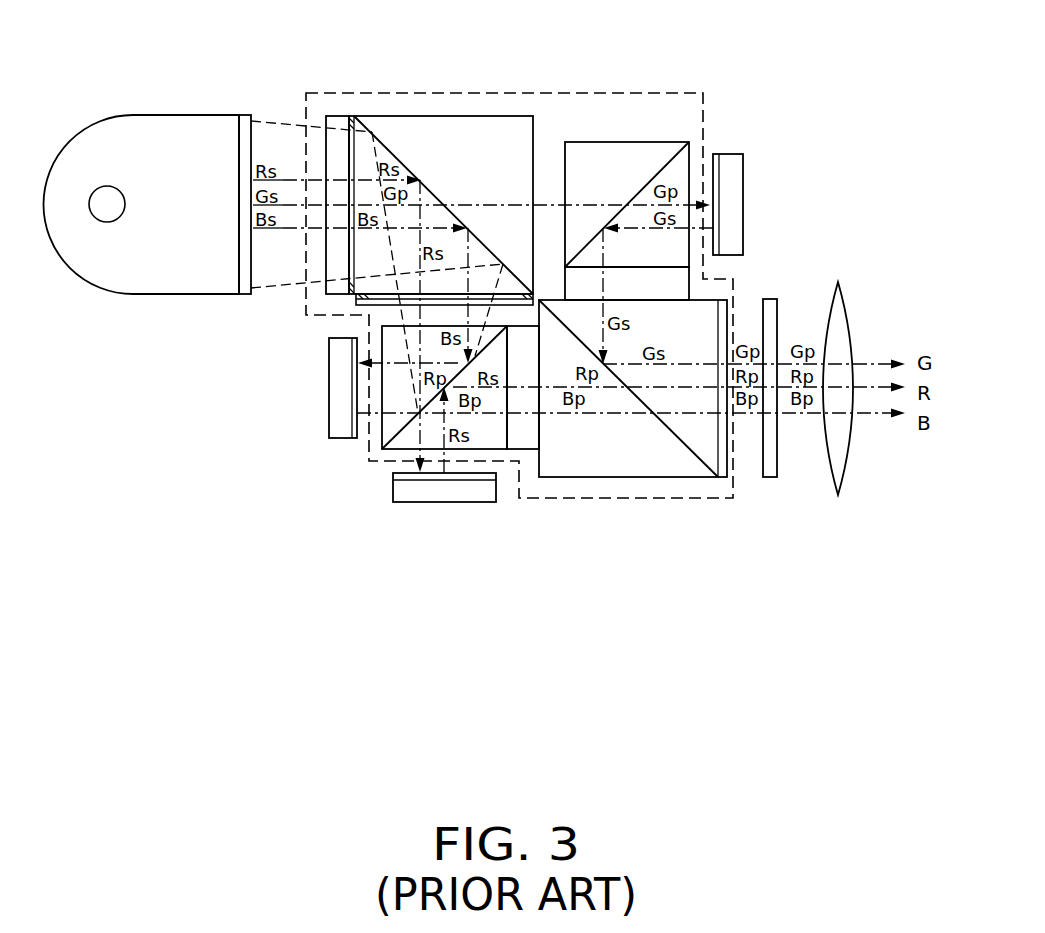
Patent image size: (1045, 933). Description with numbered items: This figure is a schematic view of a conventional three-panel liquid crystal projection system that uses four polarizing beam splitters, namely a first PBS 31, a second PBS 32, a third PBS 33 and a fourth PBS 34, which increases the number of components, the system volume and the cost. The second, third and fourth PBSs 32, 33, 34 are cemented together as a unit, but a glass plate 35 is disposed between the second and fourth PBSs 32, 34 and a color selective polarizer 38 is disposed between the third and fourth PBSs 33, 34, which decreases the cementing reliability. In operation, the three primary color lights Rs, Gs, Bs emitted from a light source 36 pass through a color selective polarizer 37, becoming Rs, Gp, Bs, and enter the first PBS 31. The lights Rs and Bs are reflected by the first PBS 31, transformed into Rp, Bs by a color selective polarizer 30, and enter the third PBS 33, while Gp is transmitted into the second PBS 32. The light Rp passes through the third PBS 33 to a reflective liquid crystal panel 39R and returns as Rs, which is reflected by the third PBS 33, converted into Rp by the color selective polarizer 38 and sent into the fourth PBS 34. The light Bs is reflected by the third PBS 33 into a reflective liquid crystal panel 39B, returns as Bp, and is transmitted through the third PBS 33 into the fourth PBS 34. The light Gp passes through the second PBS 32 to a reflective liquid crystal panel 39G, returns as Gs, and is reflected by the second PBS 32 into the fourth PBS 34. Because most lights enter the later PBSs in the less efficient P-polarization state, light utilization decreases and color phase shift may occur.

The color selective polarizer 30 is at (367, 302).
The first PBS 31 is at (510, 117).
The second PBS 32 is at (624, 142).
The third PBS 33 is at (395, 450).
The fourth PBS 34 is at (670, 478).
The glass plate 35 is at (653, 290).
The light source 36 is at (155, 295).
The color selective polarizer 37 is at (338, 117).
The color selective polarizer 38 is at (528, 430).
The reflective liquid crystal panel 39G is at (728, 152).
The reflective liquid crystal panel 39B is at (338, 403).
The reflective liquid crystal panel 39R is at (415, 503).